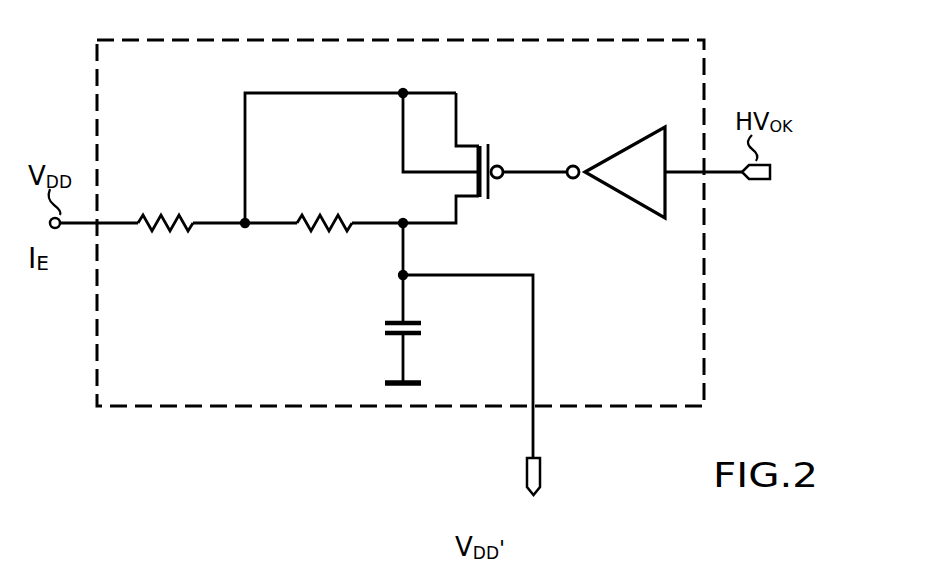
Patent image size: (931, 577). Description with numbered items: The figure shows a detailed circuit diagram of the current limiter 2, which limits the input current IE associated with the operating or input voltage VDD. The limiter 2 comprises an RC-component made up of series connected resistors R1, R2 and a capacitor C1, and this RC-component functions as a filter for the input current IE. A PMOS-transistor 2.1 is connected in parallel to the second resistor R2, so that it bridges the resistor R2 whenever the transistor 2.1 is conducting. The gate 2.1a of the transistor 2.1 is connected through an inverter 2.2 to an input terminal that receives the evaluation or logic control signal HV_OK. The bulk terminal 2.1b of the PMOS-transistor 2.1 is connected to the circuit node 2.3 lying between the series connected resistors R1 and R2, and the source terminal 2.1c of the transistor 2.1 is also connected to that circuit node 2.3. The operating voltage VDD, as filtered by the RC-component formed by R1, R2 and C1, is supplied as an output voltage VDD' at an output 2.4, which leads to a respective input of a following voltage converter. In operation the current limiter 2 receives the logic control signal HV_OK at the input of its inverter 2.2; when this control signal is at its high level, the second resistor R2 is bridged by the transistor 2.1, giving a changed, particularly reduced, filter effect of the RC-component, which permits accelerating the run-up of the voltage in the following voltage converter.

The current limiter 2 is at (262, 407).
The PMOS-transistor 2.1 is at (504, 129).
The gate 2.1a is at (498, 161).
The bulk terminal 2.1b is at (443, 176).
The source terminal 2.1c is at (472, 140).
The inverter 2.2 is at (620, 197).
The circuit node 2.3 is at (245, 230).
The output 2.4 is at (525, 470).
The first resistor R1 is at (167, 232).
The second resistor R2 is at (323, 232).
The capacitor C1 is at (422, 331).